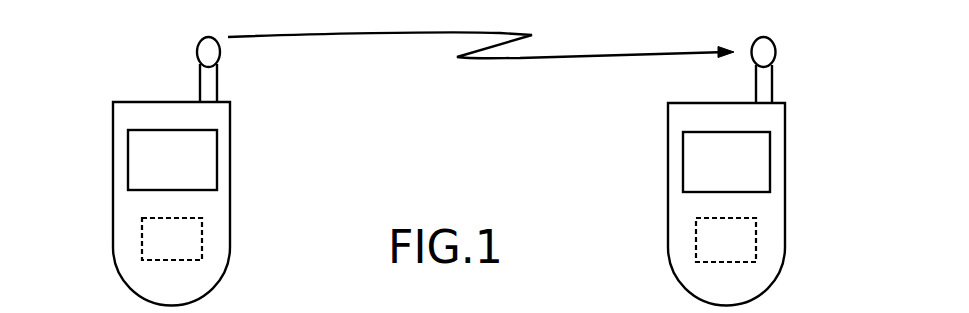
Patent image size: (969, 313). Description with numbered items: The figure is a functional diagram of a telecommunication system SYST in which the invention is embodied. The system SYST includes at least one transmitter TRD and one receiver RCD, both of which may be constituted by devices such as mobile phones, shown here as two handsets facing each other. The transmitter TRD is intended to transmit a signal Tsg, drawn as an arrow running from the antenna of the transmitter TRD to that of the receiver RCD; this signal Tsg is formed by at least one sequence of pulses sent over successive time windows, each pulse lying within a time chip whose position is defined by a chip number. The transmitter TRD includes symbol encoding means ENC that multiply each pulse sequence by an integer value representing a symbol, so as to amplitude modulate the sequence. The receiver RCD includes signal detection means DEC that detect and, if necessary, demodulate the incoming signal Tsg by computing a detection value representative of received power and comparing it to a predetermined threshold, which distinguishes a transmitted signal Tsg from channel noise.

The telecommunication system SYST is at (148, 50).
The transmitter TRD is at (113, 147).
The symbol encoding means ENC is at (172, 239).
The signal Tsg is at (481, 70).
The receiver RCD is at (785, 148).
The signal detection means DEC is at (726, 240).